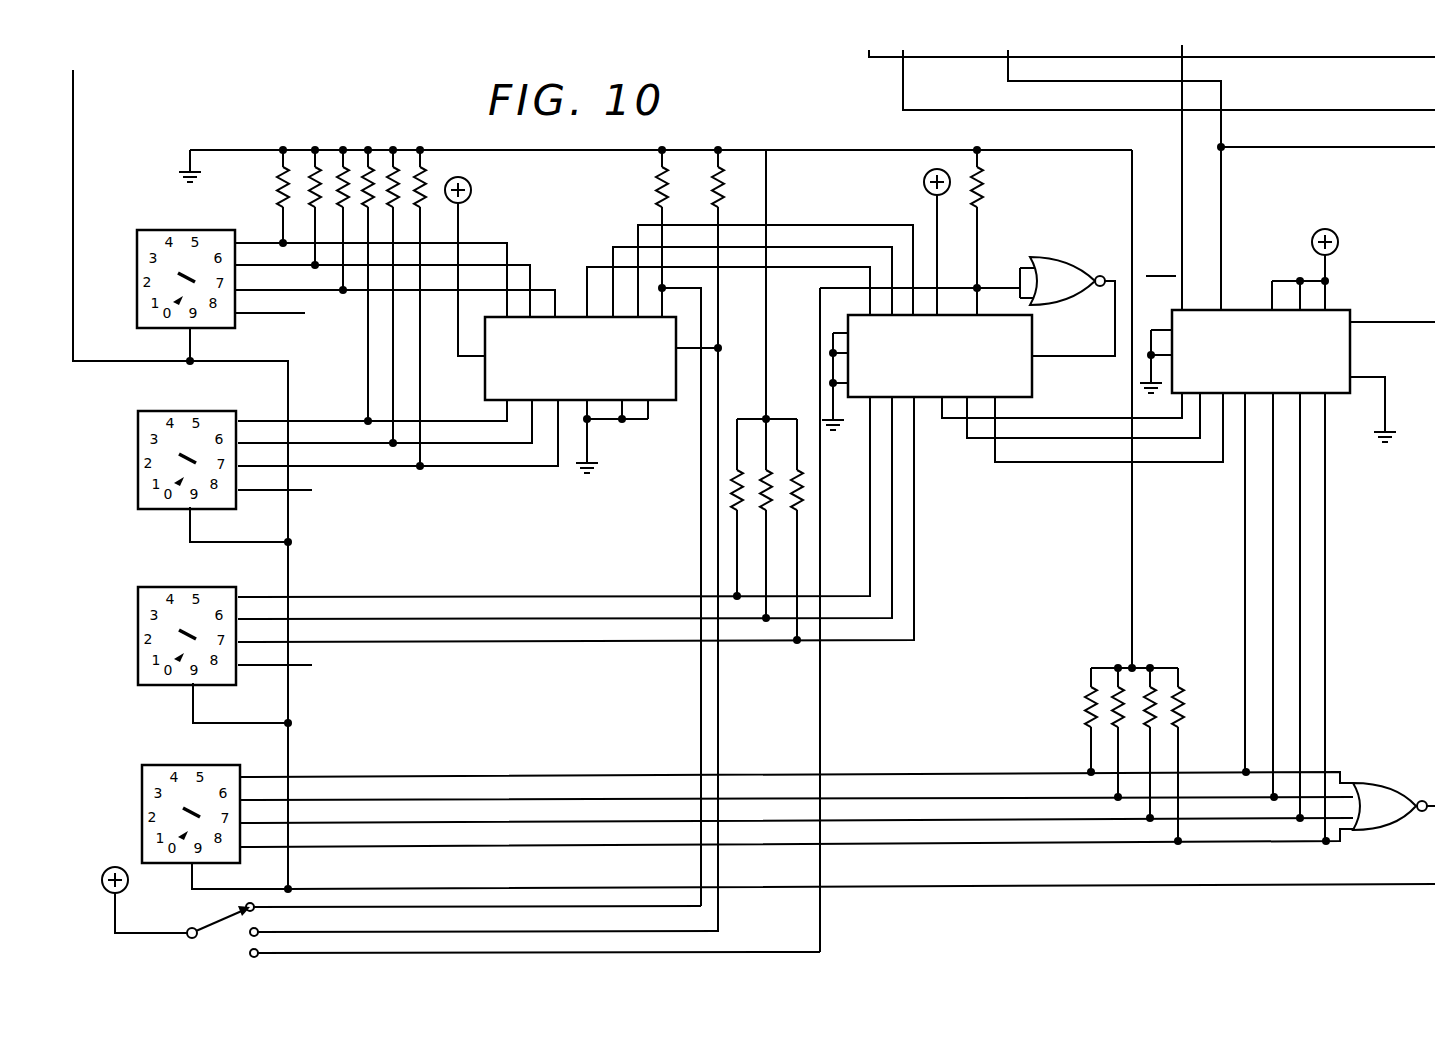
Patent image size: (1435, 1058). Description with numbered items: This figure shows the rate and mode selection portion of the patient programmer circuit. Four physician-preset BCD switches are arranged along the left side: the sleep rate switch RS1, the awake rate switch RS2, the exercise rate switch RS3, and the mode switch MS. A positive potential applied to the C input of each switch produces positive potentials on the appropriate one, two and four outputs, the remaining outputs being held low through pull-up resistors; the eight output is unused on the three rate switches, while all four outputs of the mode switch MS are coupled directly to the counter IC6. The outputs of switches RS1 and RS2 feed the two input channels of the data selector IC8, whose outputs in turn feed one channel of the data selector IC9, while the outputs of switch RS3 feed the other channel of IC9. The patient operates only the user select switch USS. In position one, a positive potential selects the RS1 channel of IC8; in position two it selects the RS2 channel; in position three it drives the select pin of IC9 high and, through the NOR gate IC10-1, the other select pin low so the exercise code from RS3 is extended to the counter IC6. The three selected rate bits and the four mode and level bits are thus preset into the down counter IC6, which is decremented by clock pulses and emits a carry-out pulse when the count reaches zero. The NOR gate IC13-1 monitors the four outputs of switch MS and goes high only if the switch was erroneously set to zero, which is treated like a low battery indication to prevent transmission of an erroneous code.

The sleep rate BCD switch RS1 is at (346, 284).
The awake rate BCD switch RS2 is at (348, 466).
The exercise rate BCD switch RS3 is at (526, 562).
The mode switch MS is at (788, 817).
The quad 2-channel data selector IC8 is at (699, 349).
The quad 2-channel data selector IC9 is at (1022, 371).
The presettable synchronous down counter IC6 is at (1287, 558).
The NOR gate IC10-1 is at (1078, 248).
The NOR gate IC13-1 is at (1402, 767).
The user select switch USS is at (221, 928).